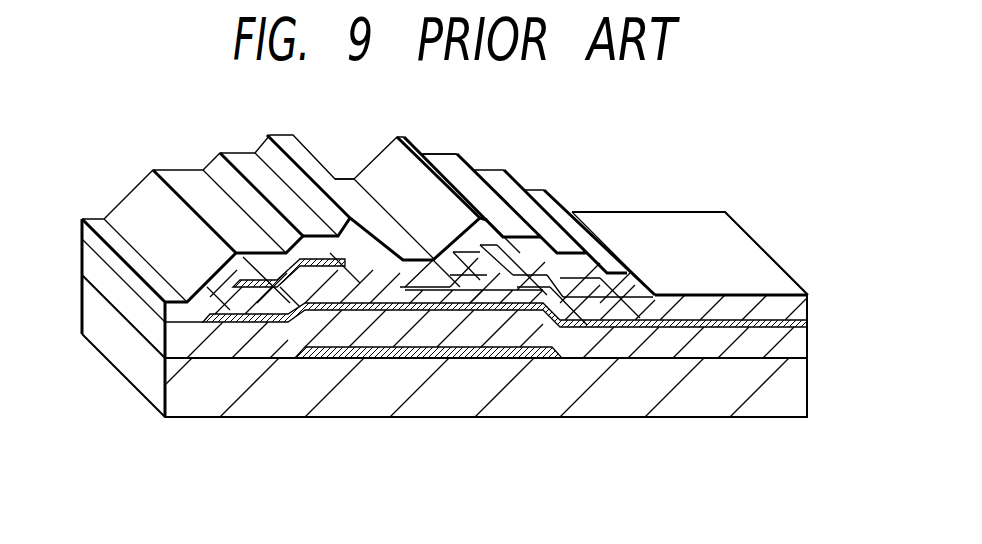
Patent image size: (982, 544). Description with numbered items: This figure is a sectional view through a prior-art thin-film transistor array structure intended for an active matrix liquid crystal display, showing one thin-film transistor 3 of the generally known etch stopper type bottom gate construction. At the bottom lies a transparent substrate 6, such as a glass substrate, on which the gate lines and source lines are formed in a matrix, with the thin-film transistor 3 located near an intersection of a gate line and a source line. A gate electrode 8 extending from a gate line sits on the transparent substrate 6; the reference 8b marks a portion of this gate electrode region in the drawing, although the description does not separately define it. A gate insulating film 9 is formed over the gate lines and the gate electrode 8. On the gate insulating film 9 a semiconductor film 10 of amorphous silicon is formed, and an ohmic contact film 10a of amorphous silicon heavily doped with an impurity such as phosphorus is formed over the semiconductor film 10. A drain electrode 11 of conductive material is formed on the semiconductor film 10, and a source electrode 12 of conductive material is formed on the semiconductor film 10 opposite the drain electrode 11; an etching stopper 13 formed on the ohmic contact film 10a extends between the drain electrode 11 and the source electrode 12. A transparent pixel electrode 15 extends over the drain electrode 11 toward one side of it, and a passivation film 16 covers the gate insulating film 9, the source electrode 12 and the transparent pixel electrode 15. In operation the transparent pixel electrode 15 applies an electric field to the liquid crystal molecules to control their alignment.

The thin-film transistor 3 is at (472, 139).
The transparent substrate 6 is at (105, 335).
The gate electrode 8 is at (424, 365).
The gate line portion 8b is at (322, 358).
The gate insulating film 9 is at (698, 355).
The semiconductor film 10 is at (230, 323).
The ohmic contact film 10a is at (397, 280).
The drain electrode 11 is at (507, 250).
The source electrode 12 is at (323, 277).
The etching stopper 13 is at (377, 293).
The transparent pixel electrode 15 is at (691, 308).
The passivation film 16 is at (152, 197).